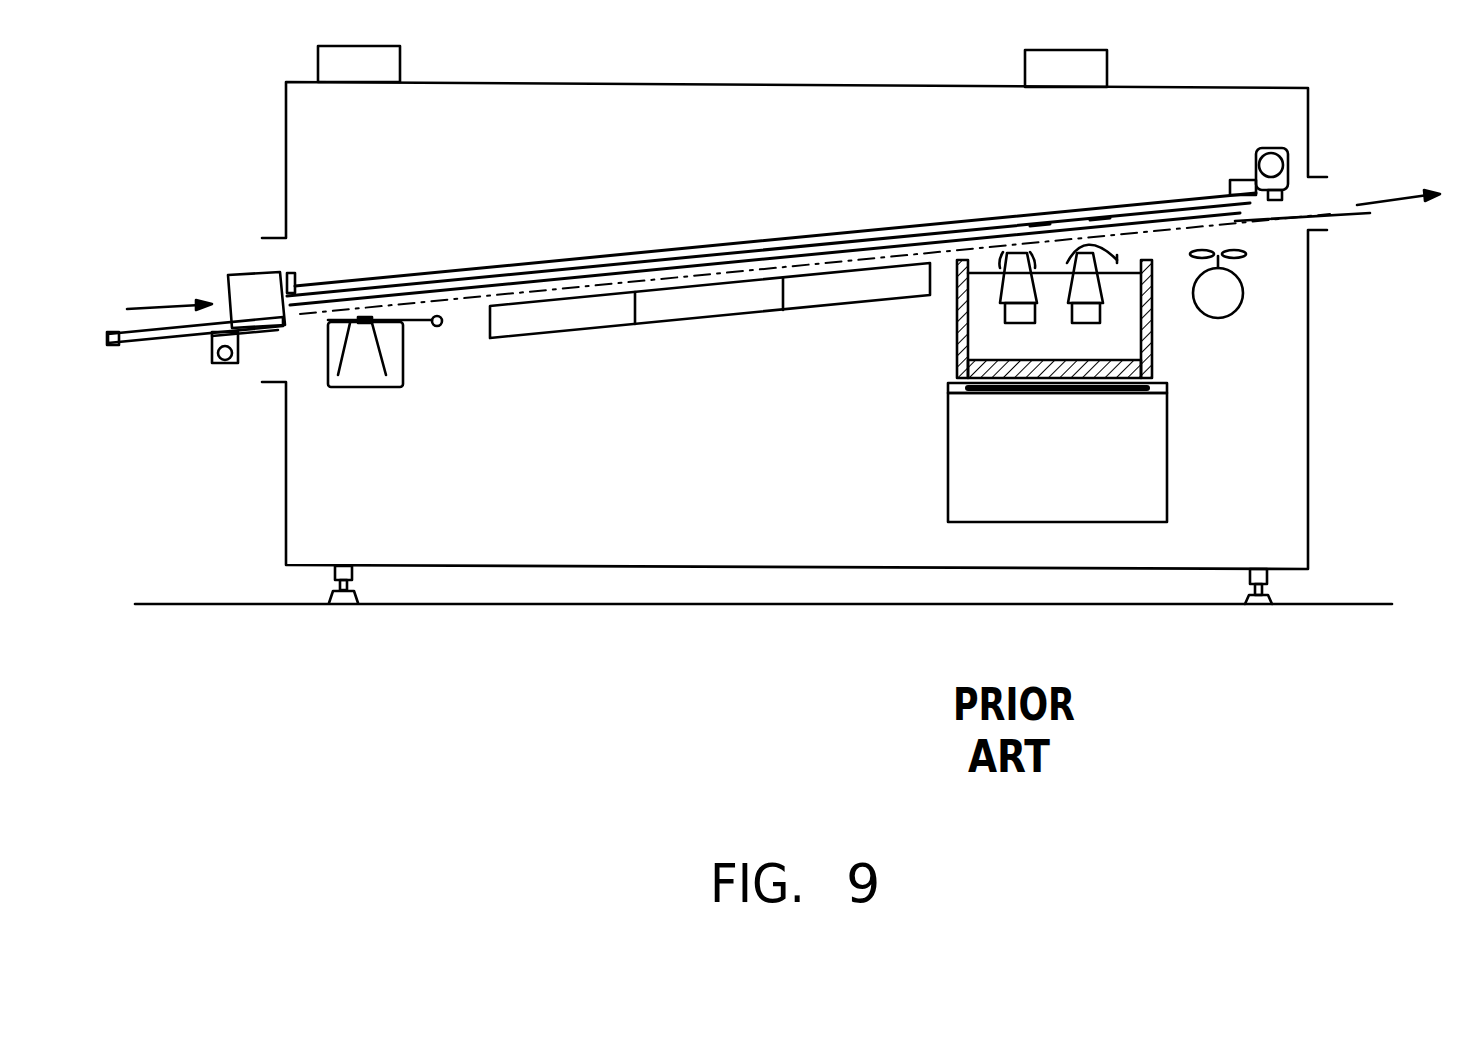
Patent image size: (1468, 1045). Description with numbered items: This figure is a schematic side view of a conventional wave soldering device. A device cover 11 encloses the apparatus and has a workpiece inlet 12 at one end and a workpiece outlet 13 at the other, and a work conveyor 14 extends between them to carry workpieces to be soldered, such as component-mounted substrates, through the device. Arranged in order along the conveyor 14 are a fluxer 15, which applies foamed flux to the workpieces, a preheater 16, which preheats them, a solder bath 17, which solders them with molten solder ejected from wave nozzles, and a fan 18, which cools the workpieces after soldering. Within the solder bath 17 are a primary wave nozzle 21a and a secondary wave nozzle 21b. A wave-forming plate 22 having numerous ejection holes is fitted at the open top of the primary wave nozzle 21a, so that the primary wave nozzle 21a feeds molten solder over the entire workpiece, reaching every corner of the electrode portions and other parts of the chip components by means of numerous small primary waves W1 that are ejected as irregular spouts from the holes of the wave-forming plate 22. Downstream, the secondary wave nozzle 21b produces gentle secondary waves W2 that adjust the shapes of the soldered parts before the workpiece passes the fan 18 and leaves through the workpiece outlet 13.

The device cover 11 is at (708, 82).
The workpiece inlet 12 is at (263, 253).
The workpiece outlet 13 is at (1318, 198).
The work conveyor 14 is at (747, 242).
The fluxer 15 is at (367, 388).
The preheater 16 is at (720, 317).
The solder bath 17 is at (957, 333).
The fan 18 is at (1232, 258).
The primary wave nozzle 21a is at (1002, 282).
The secondary wave nozzle 21b is at (1113, 282).
The wave-forming plate 22 is at (1020, 255).
The primary waves W1 is at (1040, 247).
The secondary waves W2 is at (1098, 243).